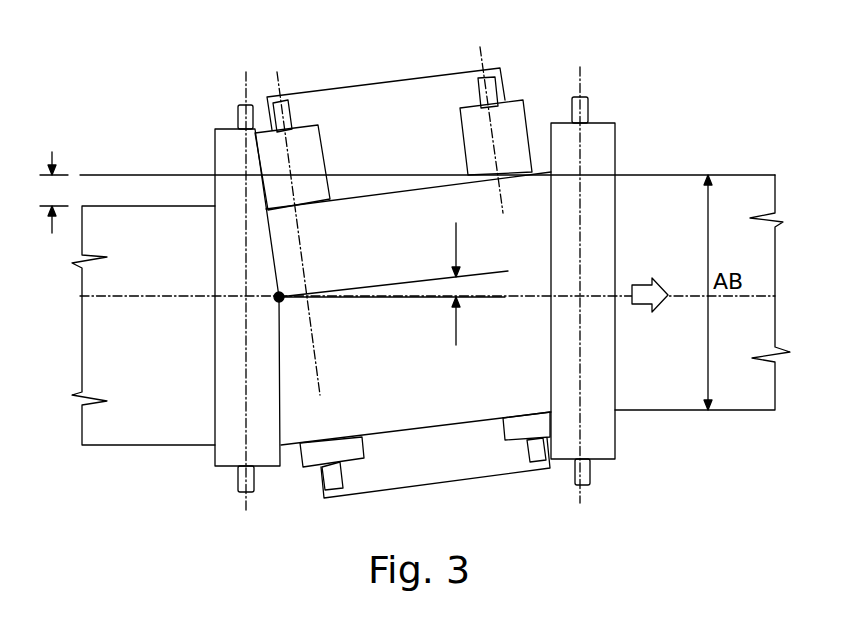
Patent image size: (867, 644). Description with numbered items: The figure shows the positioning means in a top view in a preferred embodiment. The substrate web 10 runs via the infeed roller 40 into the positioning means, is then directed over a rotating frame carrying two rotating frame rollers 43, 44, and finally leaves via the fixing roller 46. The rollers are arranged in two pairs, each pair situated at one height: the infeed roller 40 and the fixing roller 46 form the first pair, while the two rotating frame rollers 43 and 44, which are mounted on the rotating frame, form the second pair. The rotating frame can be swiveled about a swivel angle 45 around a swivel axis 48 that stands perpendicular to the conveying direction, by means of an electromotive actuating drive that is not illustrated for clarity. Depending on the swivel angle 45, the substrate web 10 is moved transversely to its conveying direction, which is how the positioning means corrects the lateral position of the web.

The substrate web 10 is at (120, 447).
The infeed roller 40 is at (222, 468).
The rotating frame roller 43 is at (300, 122).
The rotating frame roller 44 is at (510, 100).
The swivel angle 45 is at (393, 273).
The fixing roller 46 is at (603, 460).
The swivel axis 48 is at (279, 297).